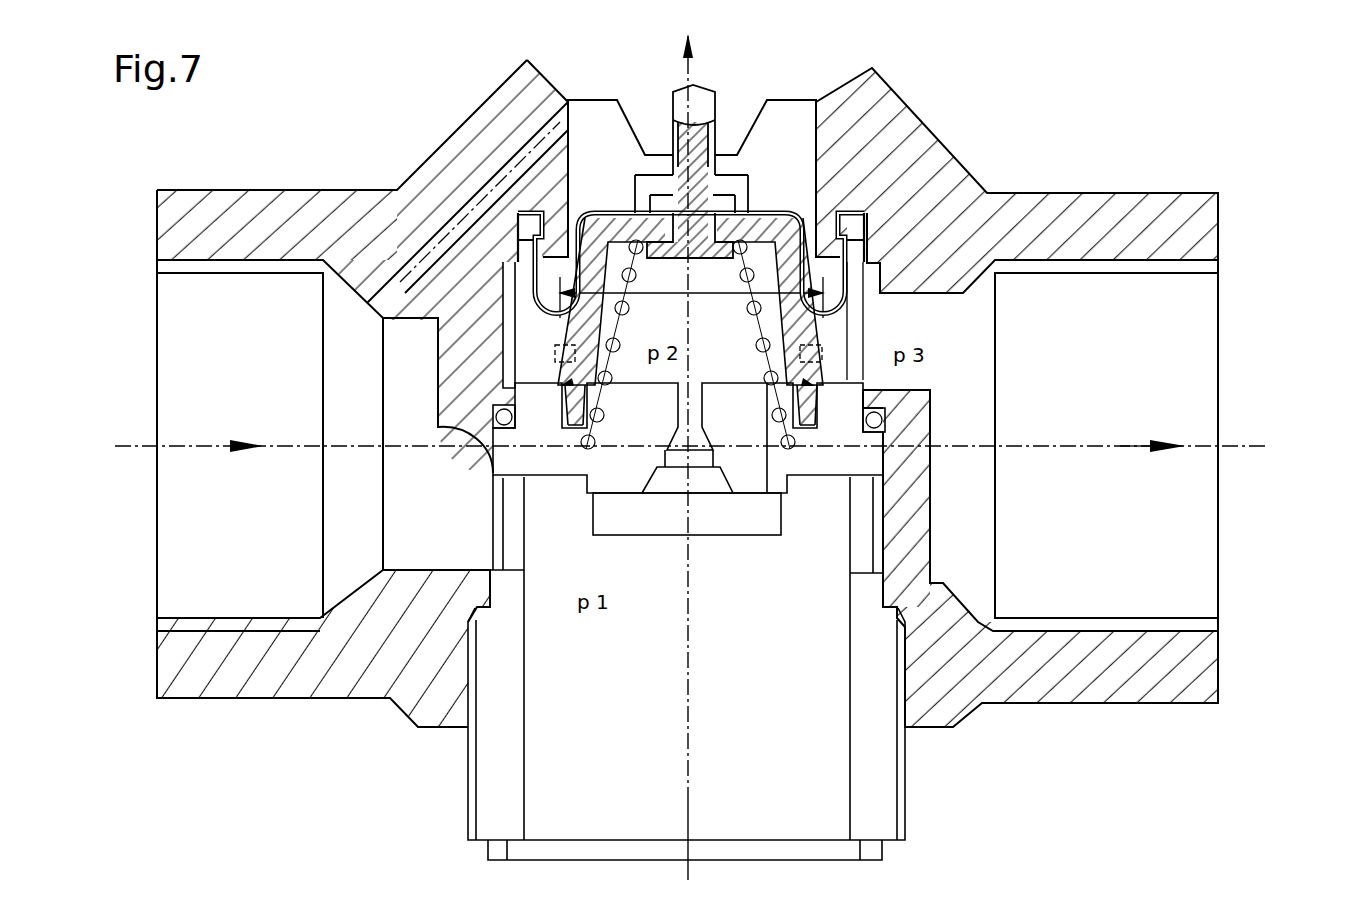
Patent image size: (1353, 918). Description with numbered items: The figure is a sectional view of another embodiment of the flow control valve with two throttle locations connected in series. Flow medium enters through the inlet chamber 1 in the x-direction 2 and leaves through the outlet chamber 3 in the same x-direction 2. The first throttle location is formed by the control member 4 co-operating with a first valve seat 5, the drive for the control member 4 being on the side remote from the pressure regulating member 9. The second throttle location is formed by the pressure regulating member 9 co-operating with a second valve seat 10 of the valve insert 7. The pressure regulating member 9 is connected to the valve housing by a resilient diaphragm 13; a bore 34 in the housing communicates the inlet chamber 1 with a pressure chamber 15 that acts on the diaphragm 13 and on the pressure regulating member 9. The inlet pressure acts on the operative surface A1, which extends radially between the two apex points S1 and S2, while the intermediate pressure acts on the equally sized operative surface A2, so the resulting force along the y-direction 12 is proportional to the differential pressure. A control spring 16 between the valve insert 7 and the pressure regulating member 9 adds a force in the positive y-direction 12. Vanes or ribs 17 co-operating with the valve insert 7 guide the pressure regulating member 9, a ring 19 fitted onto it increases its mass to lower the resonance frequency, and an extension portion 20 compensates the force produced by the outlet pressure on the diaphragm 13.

The inlet chamber 1 is at (246, 364).
The x-direction 2 is at (1150, 447).
The outlet chamber 3 is at (1134, 544).
The control member 4 is at (770, 523).
The first valve seat 5 is at (783, 487).
The valve insert 7 is at (860, 463).
The pressure regulating member 9 is at (945, 215).
The second valve seat 10 is at (866, 387).
The y-direction 12 is at (693, 63).
The resilient diaphragm 13 is at (808, 222).
The pressure chamber 15 is at (796, 177).
The control spring 16 is at (560, 432).
The vanes or ribs 17 is at (830, 423).
The ring 19 is at (790, 100).
The extension portion 20 is at (557, 362).
The bore 34 is at (415, 250).
The operative surface A1 is at (598, 213).
The operative surface A2 is at (640, 386).
The apex point S1 is at (528, 270).
The apex point S2 is at (887, 257).